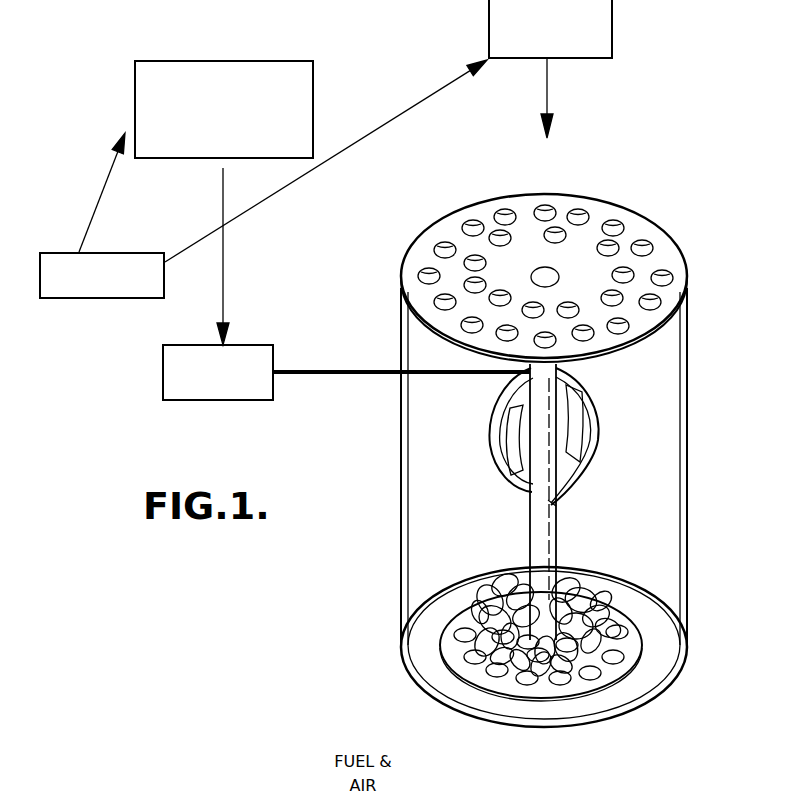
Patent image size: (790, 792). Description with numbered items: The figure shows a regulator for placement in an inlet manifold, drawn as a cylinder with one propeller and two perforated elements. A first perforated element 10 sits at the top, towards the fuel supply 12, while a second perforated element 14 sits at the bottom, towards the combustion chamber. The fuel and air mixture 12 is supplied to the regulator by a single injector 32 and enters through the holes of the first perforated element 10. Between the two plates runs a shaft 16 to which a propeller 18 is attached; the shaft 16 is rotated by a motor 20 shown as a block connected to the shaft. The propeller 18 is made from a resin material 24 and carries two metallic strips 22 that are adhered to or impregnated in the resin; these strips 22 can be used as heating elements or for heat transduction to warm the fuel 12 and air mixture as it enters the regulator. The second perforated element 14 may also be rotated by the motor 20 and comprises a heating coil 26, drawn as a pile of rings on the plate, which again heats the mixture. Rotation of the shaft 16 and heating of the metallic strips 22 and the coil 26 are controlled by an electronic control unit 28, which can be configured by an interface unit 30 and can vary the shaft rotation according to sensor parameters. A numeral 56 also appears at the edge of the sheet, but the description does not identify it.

The first perforated element 10 is at (578, 213).
The fuel supply 12 is at (549, 93).
The second perforated element 14 is at (590, 668).
The shaft 16 is at (549, 543).
The propeller 18 is at (603, 424).
The motor 20 is at (210, 400).
The metallic strips 22 is at (571, 449).
The resin material 24 is at (552, 503).
The heating coil 26 is at (588, 667).
The electronic control unit 28 is at (100, 298).
The interface unit 30 is at (134, 104).
The injector 32 is at (563, 52).
The element of adjacent figure 56 is at (118, 791).